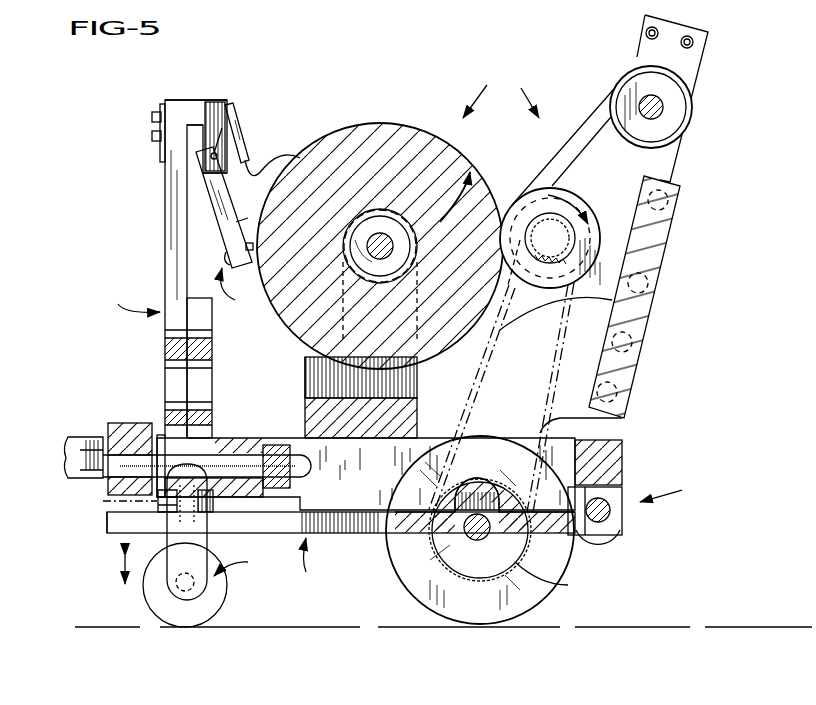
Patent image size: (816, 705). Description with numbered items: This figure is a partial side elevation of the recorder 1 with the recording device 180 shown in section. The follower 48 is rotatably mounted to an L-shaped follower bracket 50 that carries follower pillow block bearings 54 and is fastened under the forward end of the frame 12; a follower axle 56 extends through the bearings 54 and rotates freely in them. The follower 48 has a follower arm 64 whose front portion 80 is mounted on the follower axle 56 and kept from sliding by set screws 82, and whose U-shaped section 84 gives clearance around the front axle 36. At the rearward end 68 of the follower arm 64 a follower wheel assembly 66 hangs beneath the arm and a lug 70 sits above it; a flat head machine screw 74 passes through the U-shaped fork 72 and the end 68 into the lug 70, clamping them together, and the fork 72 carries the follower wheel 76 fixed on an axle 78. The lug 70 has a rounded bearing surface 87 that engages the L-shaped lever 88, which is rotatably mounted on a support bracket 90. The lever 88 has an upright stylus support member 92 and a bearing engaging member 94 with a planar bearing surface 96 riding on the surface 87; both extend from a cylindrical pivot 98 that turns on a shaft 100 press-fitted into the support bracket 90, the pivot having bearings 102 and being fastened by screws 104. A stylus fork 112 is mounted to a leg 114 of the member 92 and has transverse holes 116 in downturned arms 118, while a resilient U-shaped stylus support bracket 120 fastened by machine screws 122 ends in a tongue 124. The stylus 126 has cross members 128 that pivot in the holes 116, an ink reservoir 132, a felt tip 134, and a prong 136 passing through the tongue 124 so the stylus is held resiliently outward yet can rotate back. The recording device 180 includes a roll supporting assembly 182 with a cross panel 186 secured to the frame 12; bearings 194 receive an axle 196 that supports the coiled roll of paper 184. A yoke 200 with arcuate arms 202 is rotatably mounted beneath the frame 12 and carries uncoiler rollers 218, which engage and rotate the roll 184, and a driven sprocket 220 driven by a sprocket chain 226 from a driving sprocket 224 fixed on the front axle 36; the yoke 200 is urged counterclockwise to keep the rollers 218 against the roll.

The base plate 1 is at (228, 452).
The frame 12 is at (630, 432).
The front axle 36 is at (472, 565).
The follower 48 is at (320, 565).
The follower bracket 50 is at (674, 489).
The follower pillow block bearings 54 is at (630, 512).
The follower axle 56 is at (612, 486).
The follower arm 64 is at (236, 530).
The follower wheel assembly 66 is at (235, 571).
The rearward end 68 is at (107, 518).
The lug 70 is at (160, 435).
The U-shaped fork 72 is at (170, 548).
The flat head machine screw 74 is at (206, 540).
The follower wheel 76 is at (218, 596).
The axle 78 is at (165, 600).
The front portion 80 is at (598, 536).
The set screws 82 is at (612, 518).
The U-shaped section 84 is at (475, 482).
The rounded bearing surface 87 is at (103, 502).
The L-shaped lever 88 is at (133, 295).
The support bracket 90 is at (112, 423).
The upright stylus support member 92 is at (165, 242).
The bearing engaging member 94 is at (210, 377).
The elongated planar bearing surface 96 is at (80, 438).
The cylindrical pivot 98 is at (276, 485).
The shaft 100 is at (310, 452).
The bearings 102 is at (248, 445).
The screws 104 is at (212, 412).
The stylus fork 112 is at (228, 128).
The leg 114 is at (195, 110).
The transverse holes 116 is at (300, 158).
The downturned arms 118 is at (222, 115).
The U-shaped stylus support bracket 120 is at (181, 100).
The machine screws 122 is at (152, 135).
The tongue 124 is at (241, 163).
The stylus 126 is at (239, 282).
The cross members 128 is at (220, 207).
The ink reservoir 132 is at (245, 222).
The tip 134 is at (262, 245).
The prong 136 is at (232, 142).
The recording device 180 is at (501, 92).
The roll supporting assembly 182 is at (420, 387).
The coiled roll of paper 184 is at (448, 158).
The cross panel 186 is at (415, 431).
The bearings 194 is at (385, 228).
The axle 196 is at (388, 265).
The yoke 200 is at (652, 345).
The arcuate arm 202 is at (527, 399).
The uncoiler rollers 218 is at (548, 183).
The driven sprocket 220 is at (585, 240).
The driving sprocket 224 is at (560, 577).
The sprocket chain 226 is at (553, 300).